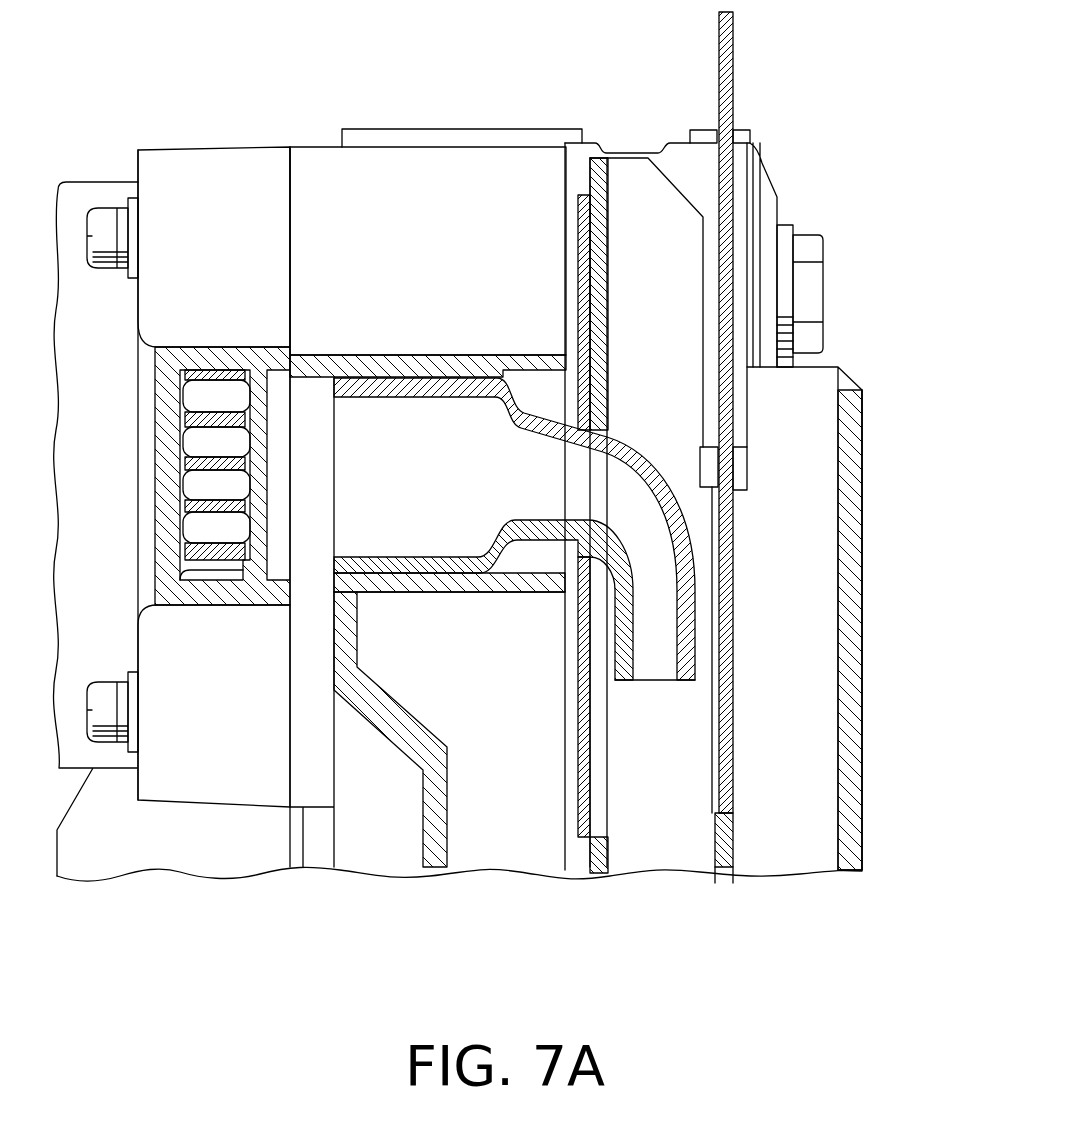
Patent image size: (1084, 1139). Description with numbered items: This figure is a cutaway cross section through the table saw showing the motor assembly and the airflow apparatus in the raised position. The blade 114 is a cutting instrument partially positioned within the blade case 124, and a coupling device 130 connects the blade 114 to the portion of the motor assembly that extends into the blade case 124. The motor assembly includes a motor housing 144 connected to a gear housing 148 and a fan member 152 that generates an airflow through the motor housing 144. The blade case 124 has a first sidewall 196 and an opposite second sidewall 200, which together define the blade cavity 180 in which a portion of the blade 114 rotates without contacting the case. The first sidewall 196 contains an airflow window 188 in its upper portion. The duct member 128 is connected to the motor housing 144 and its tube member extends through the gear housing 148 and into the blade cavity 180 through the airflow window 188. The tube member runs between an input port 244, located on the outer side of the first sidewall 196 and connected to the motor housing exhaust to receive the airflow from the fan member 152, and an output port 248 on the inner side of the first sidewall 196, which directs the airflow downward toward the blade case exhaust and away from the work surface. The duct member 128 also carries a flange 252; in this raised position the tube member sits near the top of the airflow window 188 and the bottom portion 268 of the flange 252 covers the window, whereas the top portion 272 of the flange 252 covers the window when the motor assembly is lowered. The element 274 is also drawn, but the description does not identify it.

The blade 114 is at (733, 548).
The blade case 124 is at (858, 607).
The duct member 128 is at (415, 387).
The coupling device 130 is at (760, 195).
The motor housing 144 is at (200, 147).
The gear housing 148 is at (417, 147).
The fan member 152 is at (205, 405).
The blade cavity 180 is at (778, 713).
The airflow window 188 is at (598, 830).
The first sidewall 196 is at (610, 343).
The second sidewall 200 is at (862, 772).
The input port 244 is at (336, 562).
The output port 248 is at (685, 680).
The flange 252 is at (587, 305).
The bottom portion 268 is at (582, 783).
The top portion 272 is at (587, 257).
The cap 274 is at (608, 180).